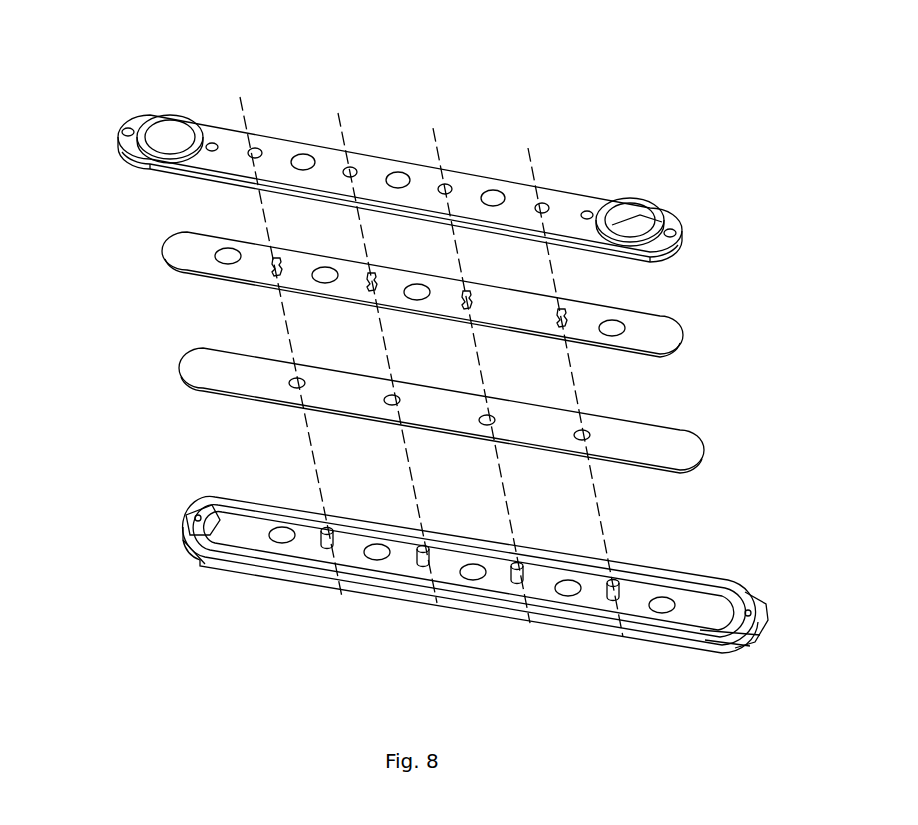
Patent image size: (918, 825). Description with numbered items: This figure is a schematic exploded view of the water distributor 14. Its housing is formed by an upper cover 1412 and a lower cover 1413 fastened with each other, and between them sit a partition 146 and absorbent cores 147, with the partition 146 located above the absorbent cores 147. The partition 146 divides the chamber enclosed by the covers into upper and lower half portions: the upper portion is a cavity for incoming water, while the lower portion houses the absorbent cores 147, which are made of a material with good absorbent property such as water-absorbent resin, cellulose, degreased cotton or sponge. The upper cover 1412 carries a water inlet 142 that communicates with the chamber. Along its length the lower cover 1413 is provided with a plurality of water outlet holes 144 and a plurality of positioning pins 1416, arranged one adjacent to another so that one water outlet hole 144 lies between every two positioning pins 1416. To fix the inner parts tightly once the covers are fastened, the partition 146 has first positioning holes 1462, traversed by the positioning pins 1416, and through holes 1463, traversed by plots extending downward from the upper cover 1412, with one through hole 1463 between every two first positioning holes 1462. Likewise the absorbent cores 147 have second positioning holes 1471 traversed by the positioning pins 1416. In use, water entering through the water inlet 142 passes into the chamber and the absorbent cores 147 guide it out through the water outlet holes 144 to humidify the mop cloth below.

The water distributor 14 is at (62, 45).
The upper cover 1412 is at (243, 133).
The water inlet 142 is at (632, 217).
The partition 146 is at (172, 250).
The first positioning holes 1462 is at (567, 309).
The through holes 1463 is at (612, 329).
The absorbent cores 147 is at (243, 373).
The second positioning holes 1471 is at (582, 437).
The lower cover 1413 is at (192, 552).
The positioning pins 1416 is at (618, 582).
The water outlet holes 144 is at (662, 608).